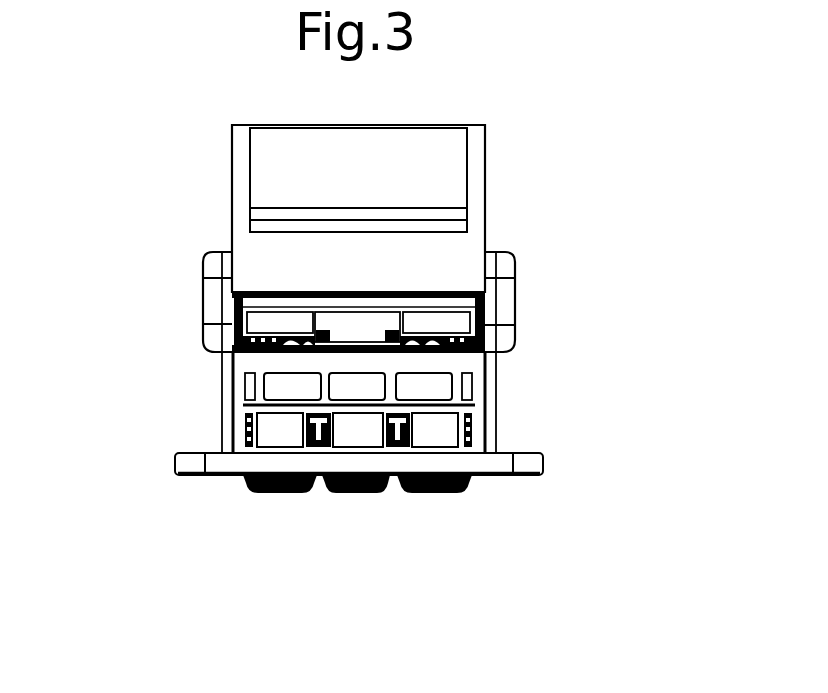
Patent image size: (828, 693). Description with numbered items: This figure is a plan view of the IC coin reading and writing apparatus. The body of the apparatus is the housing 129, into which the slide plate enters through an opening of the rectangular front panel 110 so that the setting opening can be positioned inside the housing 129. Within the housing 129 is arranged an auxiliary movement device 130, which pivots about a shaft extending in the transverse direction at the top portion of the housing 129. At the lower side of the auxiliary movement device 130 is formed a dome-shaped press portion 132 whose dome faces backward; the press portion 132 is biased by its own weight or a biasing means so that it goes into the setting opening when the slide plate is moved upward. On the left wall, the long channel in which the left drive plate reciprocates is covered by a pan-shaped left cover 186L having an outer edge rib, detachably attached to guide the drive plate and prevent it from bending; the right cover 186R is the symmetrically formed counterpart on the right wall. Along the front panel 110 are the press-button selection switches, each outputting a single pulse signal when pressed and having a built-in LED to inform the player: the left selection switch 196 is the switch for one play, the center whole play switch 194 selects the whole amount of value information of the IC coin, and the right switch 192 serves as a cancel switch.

The housing 129 is at (296, 209).
The left cover 186L is at (141, 352).
The right cover 186R is at (577, 352).
The auxiliary movement device 130 is at (244, 363).
The press portion 132 is at (513, 346).
The front panel 110 is at (316, 506).
The left selection switch 196 is at (266, 535).
The whole play switch 194 is at (356, 528).
The right switch 192 is at (444, 538).